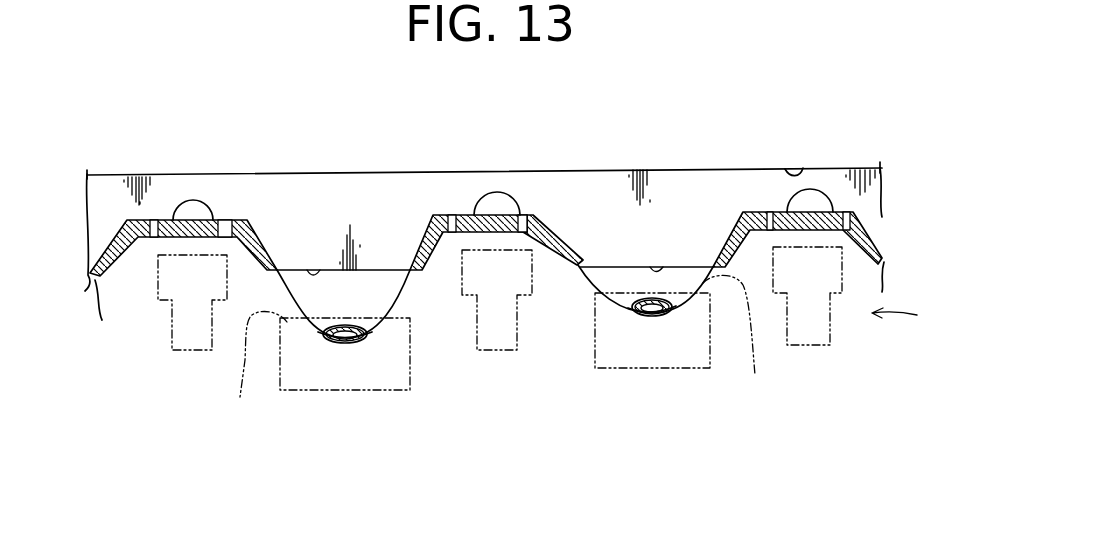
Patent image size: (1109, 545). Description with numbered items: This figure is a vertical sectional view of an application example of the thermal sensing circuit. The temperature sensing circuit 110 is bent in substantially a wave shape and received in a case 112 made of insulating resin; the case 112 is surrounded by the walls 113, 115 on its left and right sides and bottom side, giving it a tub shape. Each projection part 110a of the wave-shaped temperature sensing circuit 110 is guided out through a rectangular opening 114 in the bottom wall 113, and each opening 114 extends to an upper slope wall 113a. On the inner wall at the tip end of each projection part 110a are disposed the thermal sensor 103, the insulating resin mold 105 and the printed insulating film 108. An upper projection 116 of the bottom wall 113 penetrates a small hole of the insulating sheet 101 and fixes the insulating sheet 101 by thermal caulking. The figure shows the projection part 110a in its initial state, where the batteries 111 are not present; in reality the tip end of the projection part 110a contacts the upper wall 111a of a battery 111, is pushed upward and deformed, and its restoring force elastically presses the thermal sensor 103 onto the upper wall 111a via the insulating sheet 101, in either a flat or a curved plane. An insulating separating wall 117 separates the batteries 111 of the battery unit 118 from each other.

The insulating sheet 101 is at (400, 270).
The thermal sensor 103 is at (348, 342).
The insulating resin mold 105 is at (360, 337).
The printed insulating film 108 is at (337, 324).
The temperature sensing circuit 110 is at (403, 313).
The projection part 110a is at (308, 325).
The battery 111 is at (411, 357).
The upper wall of the battery 111a is at (507, 352).
The case 112 is at (740, 164).
The bottom wall 113 is at (527, 216).
The upper slope wall 113a is at (579, 250).
The opening 114 is at (313, 270).
The wall 115 is at (803, 168).
The upper projection 116 is at (480, 203).
The insulating separating wall 117 is at (840, 310).
The battery unit 118 is at (914, 314).